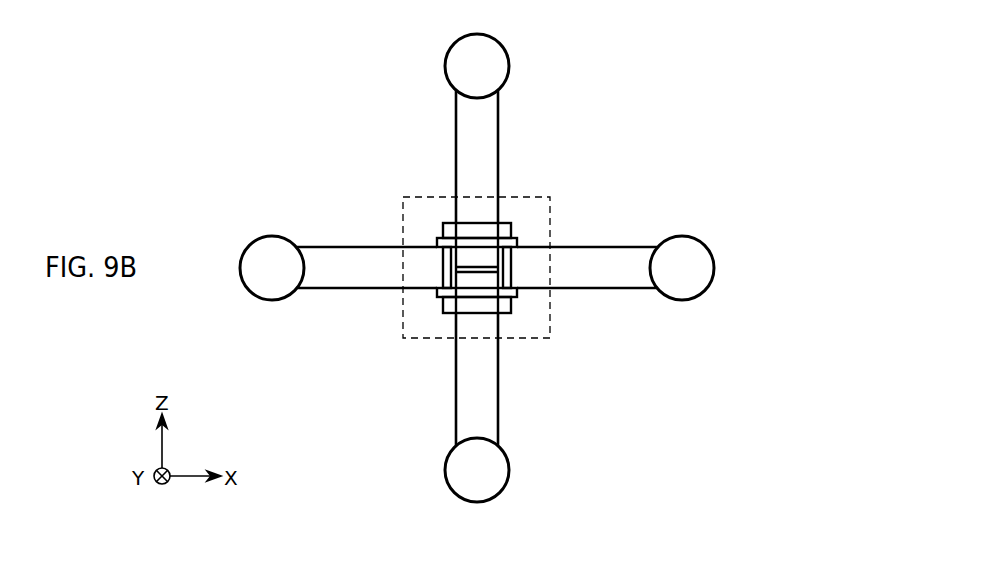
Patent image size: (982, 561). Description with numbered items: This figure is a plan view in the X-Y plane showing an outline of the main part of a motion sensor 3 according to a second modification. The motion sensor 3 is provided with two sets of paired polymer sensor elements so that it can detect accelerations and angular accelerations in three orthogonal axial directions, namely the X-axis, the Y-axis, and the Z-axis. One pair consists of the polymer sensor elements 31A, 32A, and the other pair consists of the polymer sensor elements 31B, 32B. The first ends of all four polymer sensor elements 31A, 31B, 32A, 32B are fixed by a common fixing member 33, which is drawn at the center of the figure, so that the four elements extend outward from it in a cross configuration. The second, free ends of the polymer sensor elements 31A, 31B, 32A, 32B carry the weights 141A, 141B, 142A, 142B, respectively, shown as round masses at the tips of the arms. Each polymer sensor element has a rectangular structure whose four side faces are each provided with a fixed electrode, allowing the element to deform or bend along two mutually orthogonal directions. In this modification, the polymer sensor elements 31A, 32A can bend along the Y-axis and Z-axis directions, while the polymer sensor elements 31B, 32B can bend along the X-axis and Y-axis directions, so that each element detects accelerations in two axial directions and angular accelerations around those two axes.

The motion sensor 3 is at (698, 112).
The polymer sensor element 31A is at (362, 242).
The polymer sensor element 31B is at (513, 401).
The polymer sensor element 32A is at (592, 240).
The polymer sensor element 32B is at (513, 155).
The common fixing member 33 is at (430, 340).
The weight 141A is at (265, 272).
The weight 141B is at (497, 465).
The weight 142A is at (692, 263).
The weight 142B is at (497, 52).